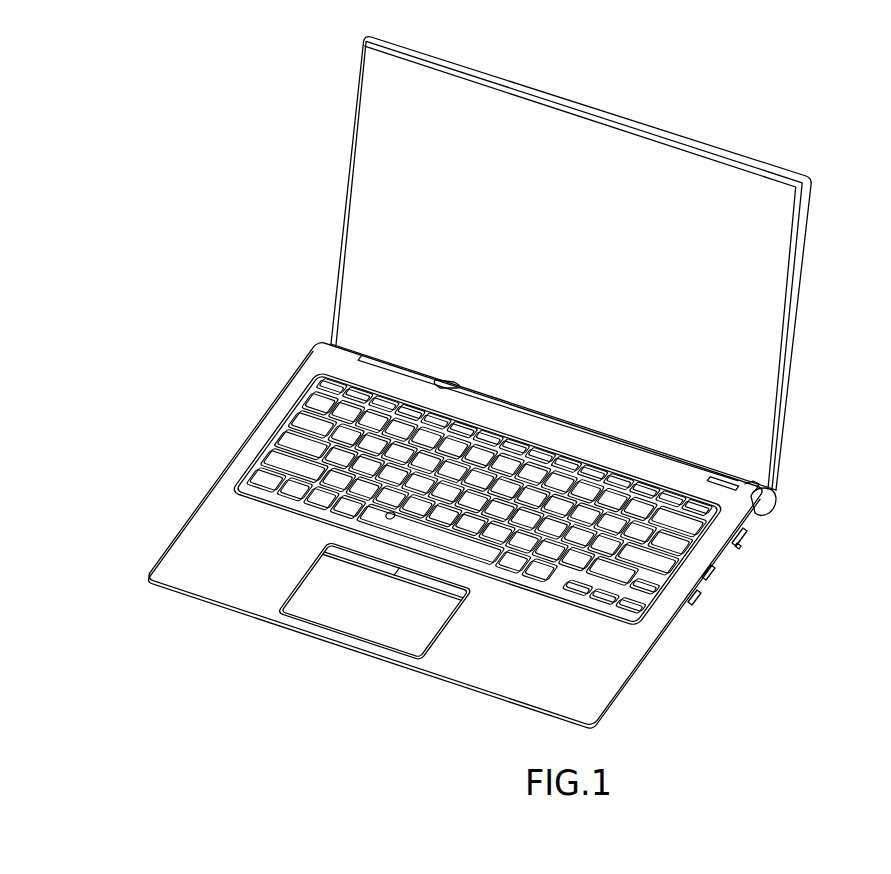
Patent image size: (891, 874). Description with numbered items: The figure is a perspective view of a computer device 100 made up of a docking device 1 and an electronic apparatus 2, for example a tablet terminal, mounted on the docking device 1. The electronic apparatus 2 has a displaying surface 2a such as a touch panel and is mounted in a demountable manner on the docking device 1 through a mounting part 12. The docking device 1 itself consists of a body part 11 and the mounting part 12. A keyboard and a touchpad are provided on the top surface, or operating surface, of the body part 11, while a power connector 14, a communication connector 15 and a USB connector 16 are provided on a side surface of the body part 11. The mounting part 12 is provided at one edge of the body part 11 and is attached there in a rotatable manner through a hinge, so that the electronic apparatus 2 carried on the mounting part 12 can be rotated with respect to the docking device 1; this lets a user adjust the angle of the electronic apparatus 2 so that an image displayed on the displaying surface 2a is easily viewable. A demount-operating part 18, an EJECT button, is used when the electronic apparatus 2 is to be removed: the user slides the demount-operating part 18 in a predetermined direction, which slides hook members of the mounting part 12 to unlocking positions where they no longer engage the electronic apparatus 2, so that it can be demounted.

The computer device 100 is at (791, 146).
The docking device 1 is at (214, 478).
The electronic apparatus 2 is at (339, 216).
The displaying surface 2a is at (762, 323).
The body part 11 is at (592, 674).
The mounting part 12 is at (772, 512).
The power connector 14 is at (752, 488).
The communication connector 15 is at (741, 546).
The USB connector 16 is at (709, 578).
The demount-operating part 18 is at (448, 378).